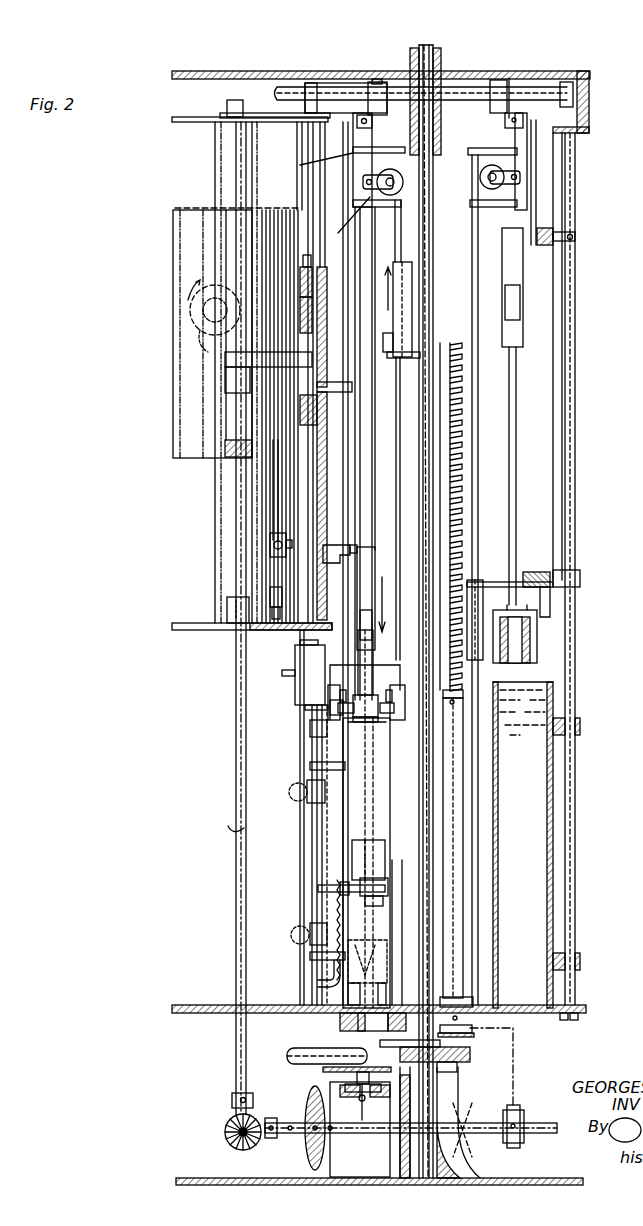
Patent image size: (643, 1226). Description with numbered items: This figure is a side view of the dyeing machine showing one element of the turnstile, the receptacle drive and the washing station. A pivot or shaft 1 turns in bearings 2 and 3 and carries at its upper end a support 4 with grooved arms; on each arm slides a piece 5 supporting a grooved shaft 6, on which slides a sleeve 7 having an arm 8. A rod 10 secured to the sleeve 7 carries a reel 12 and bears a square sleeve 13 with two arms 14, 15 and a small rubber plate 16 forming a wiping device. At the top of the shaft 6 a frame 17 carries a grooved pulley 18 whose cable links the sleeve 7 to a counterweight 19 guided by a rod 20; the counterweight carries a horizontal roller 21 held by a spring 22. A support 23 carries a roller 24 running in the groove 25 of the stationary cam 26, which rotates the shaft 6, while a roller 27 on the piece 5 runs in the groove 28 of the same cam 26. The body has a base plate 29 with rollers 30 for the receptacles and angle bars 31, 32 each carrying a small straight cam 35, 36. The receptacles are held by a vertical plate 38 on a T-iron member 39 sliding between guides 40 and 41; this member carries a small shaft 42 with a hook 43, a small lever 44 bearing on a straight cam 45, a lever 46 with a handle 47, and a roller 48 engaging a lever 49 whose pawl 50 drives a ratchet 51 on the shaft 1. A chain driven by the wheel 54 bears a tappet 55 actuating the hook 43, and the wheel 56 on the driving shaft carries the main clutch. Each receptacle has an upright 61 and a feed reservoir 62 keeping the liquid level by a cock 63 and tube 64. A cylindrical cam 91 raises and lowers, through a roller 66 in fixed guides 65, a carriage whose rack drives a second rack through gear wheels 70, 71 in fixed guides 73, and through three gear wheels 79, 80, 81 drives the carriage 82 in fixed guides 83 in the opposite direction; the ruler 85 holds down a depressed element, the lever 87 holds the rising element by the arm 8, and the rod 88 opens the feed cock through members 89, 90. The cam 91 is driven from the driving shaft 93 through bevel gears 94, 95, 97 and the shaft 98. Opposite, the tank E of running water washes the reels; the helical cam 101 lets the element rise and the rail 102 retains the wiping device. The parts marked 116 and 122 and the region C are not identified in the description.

The pivot or shaft 1 is at (428, 345).
The bearing 2 is at (436, 50).
The bearing 3 is at (455, 1165).
The support 4 is at (441, 140).
The piece 5 is at (375, 112).
The grooved shaft 6 is at (355, 452).
The sleeve 7 is at (524, 286).
The arm 8 is at (375, 575).
The rod 10 is at (517, 430).
The reel 12 is at (340, 1022).
The small sleeve 13 is at (360, 685).
The arm 14 is at (333, 666).
The arm 15 is at (384, 665).
The small rubber plate 16 is at (372, 720).
The frame 17 is at (312, 164).
The grooved pulley 18 is at (350, 221).
The counterweight 19 is at (414, 304).
The rod 20 is at (400, 440).
The horizontal roller 21 is at (446, 347).
The spring 22 is at (386, 354).
The support 23 is at (372, 150).
The roller 24 is at (393, 78).
The groove 25 is at (366, 79).
The stationary cam 26 is at (472, 78).
The roller 27 is at (412, 62).
The groove 28 is at (405, 75).
The base plate 29 is at (204, 1005).
The rollers 30 is at (358, 1000).
The angle bar 31 is at (330, 684).
The angle bar 32 is at (396, 680).
The small straight cam 35 is at (334, 722).
The small straight cam 36 is at (392, 716).
The vertical plate 38 is at (357, 852).
The T-iron member 39 is at (438, 1028).
The guide 40 is at (388, 1024).
The guide 41 is at (440, 1044).
The small shaft 42 is at (320, 1050).
The hook 43 is at (330, 1070).
The small lever 44 is at (465, 1062).
The straight cam 45 is at (455, 1050).
The lever 46 is at (345, 1062).
The handle 47 is at (290, 1058).
The roller 48 is at (365, 1102).
The lever 49 is at (445, 1080).
The pawl 50 is at (410, 1080).
The ratchet 51 is at (446, 1068).
The wheel 54 is at (362, 1134).
The tappet 55 is at (345, 1088).
The wheel 56 is at (306, 1158).
The upright 61 is at (300, 915).
The feed reservoir 62 is at (295, 663).
The cock 63 is at (310, 722).
The tube 64 is at (320, 758).
The fixed guides 65 is at (310, 325).
The roller 66 is at (328, 425).
The gear wheel 70 is at (313, 290).
The gear wheel 71 is at (312, 262).
The fixed guides 73 is at (326, 360).
The gear wheel 79 is at (210, 350).
The gear wheel 80 is at (208, 322).
The gear wheel 81 is at (192, 318).
The carriage 82 is at (230, 448).
The fixed guides 83 is at (255, 585).
The bar or ruler 85 is at (336, 565).
The lever 87 is at (345, 377).
The rod 88 is at (272, 512).
The member 89 is at (270, 538).
The member 90 is at (290, 600).
The cylindrical cam 91 is at (178, 422).
The driving shaft 93 is at (410, 1115).
The bevel gear 94 is at (270, 1138).
The bevel gear 95 is at (268, 1140).
The bevel gear 97 is at (232, 1100).
The shaft 98 is at (236, 1140).
The helical cam 101 is at (560, 232).
The rail 102 is at (545, 575).
The casing 116 is at (220, 258).
The pipe 122 is at (320, 884).
The cylinder C is at (390, 832).
The tank E is at (540, 810).